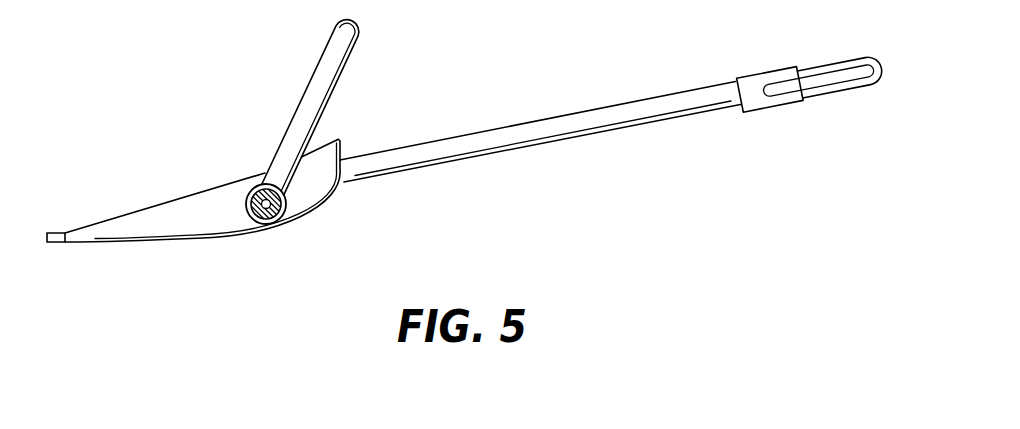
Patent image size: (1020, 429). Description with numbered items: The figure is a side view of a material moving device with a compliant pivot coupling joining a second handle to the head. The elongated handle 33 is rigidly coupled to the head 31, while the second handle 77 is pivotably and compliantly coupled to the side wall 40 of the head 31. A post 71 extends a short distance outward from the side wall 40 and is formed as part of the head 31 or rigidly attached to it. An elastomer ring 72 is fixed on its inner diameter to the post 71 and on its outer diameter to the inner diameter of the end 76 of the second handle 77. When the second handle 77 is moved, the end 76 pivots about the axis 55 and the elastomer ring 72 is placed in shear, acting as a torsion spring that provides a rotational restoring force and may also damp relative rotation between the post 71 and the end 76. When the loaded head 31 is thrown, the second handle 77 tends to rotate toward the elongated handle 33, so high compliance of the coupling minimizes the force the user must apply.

The head 31 is at (108, 243).
The elongated handle 33 is at (593, 108).
The side wall 40 is at (157, 222).
The axis 55 is at (262, 182).
The post 71 is at (272, 204).
The elastomer ring 72 is at (281, 216).
The end of handle 76 is at (268, 226).
The second handle 77 is at (349, 56).